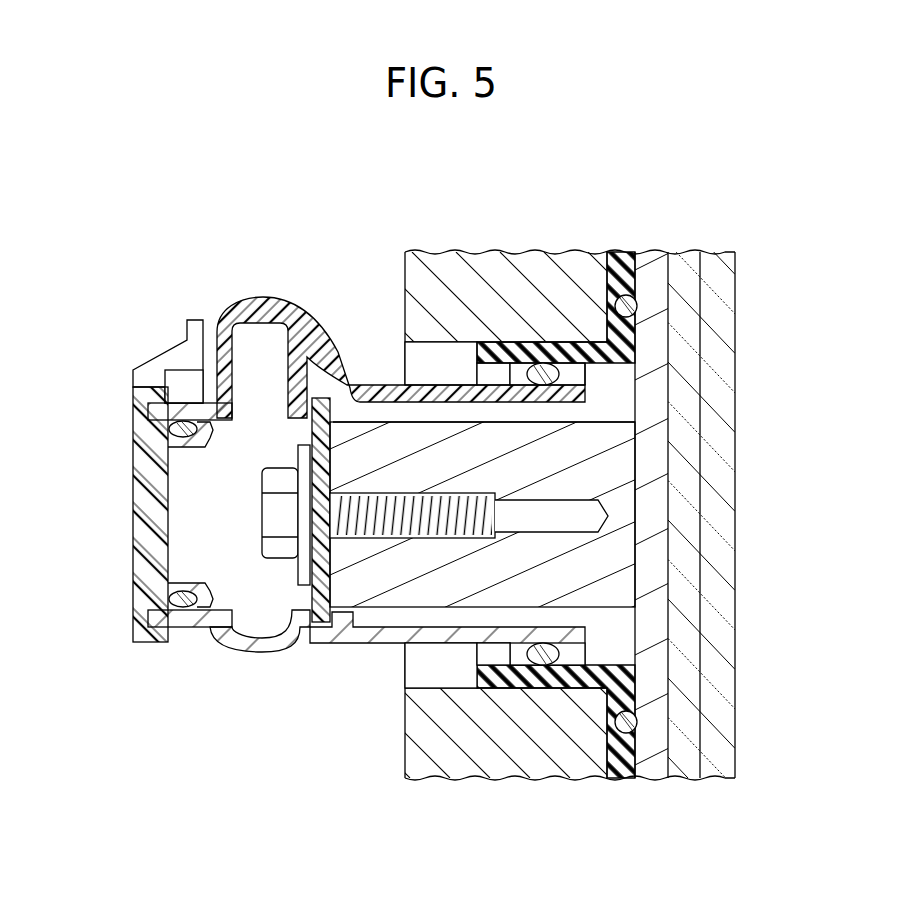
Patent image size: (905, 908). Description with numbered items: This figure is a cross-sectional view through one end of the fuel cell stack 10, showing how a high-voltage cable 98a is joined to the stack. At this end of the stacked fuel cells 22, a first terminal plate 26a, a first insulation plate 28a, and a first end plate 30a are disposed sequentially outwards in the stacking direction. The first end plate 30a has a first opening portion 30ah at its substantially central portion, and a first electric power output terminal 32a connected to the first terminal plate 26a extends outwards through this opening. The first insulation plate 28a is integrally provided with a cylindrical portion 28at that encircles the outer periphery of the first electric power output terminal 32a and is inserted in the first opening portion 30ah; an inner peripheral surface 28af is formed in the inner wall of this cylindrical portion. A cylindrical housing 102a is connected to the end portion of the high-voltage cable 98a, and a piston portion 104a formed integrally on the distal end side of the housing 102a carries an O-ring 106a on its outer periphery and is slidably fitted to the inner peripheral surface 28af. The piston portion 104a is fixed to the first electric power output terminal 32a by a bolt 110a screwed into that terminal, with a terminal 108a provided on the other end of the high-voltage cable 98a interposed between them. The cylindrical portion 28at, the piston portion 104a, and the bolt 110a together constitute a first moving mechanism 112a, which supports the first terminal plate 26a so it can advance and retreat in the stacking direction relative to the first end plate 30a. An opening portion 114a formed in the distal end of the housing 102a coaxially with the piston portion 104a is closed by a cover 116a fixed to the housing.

The fuel cell stack 10 is at (406, 141).
The fuel cells 22 is at (690, 298).
The first terminal plate 26a is at (656, 243).
The first insulation plate 28a is at (563, 468).
The cylindrical portion 28at is at (562, 366).
The inner peripheral surface 28af is at (613, 665).
The first end plate 30a is at (482, 243).
The first opening portion 30ah is at (548, 388).
The first electric power output terminal 32a is at (350, 462).
The high-voltage cable 98a is at (401, 317).
The housing 102a is at (285, 286).
The piston portion 104a is at (446, 645).
The O-ring 106a is at (545, 662).
The terminal 108a is at (323, 624).
The bolt 110a is at (432, 526).
The first moving mechanism 112a is at (390, 653).
The opening portion 114a is at (184, 590).
The cover 116a is at (138, 543).